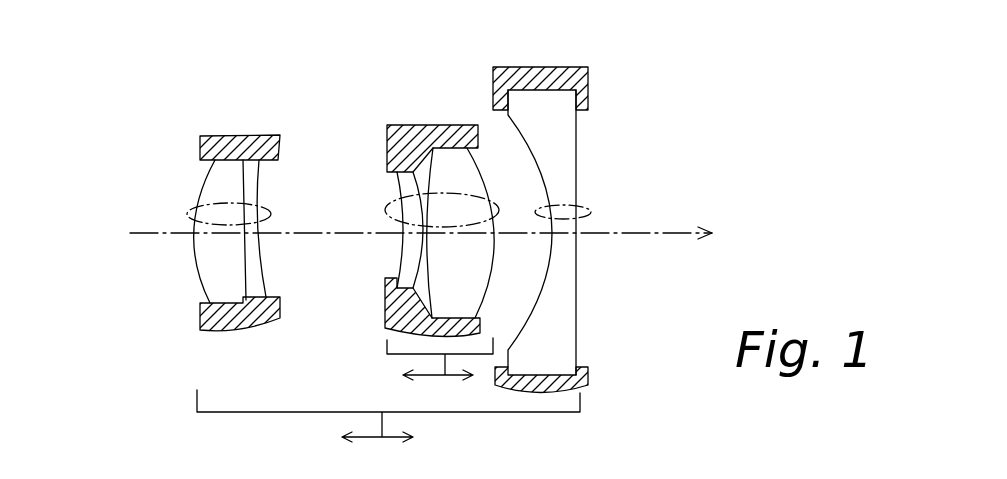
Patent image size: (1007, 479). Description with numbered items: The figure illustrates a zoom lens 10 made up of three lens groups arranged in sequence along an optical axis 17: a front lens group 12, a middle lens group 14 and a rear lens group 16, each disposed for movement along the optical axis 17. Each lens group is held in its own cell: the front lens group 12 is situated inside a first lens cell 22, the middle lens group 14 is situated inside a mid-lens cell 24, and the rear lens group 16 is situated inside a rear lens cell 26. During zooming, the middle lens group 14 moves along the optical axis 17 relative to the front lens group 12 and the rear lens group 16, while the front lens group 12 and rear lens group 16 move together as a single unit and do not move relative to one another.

The zoom lens 10 is at (658, 102).
The front lens group 12 is at (197, 207).
The middle lens group 14 is at (388, 202).
The rear lens group 16 is at (587, 207).
The optical axis 17 is at (663, 232).
The first lens cell 22 is at (210, 142).
The mid-lens cell 24 is at (400, 127).
The rear lens cell 26 is at (517, 78).